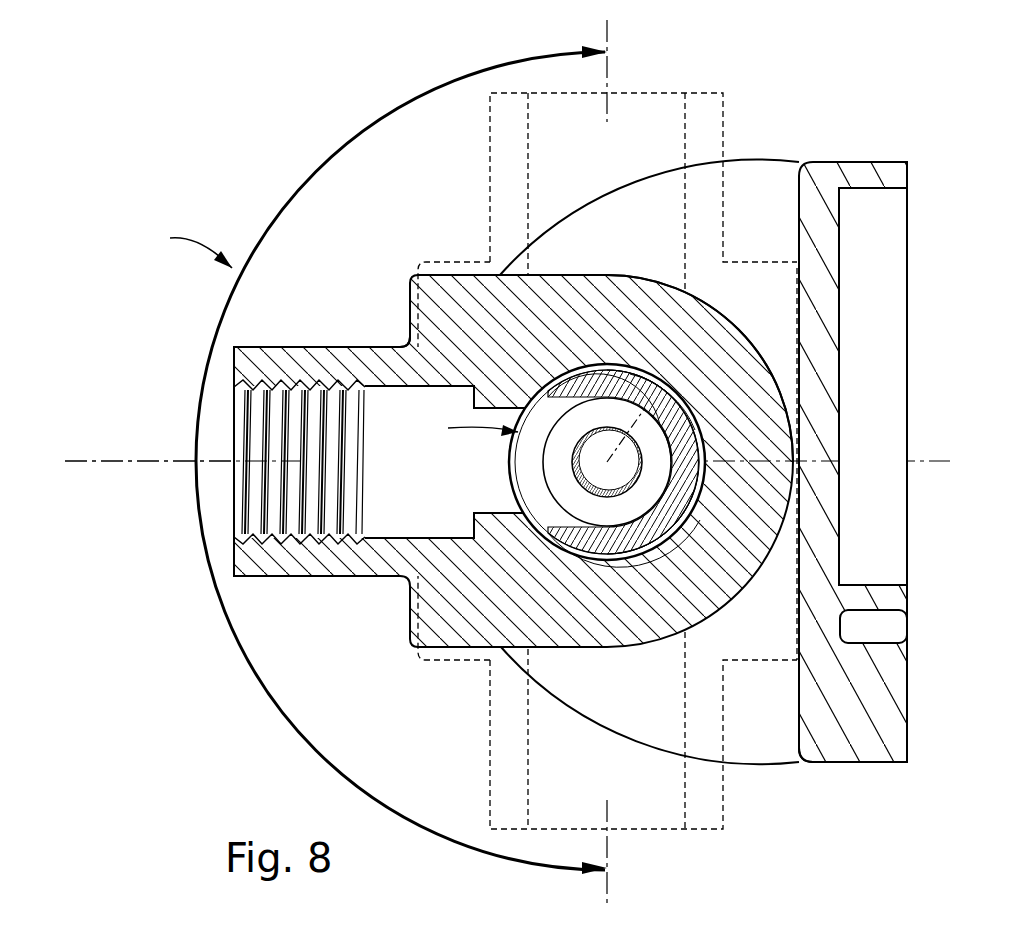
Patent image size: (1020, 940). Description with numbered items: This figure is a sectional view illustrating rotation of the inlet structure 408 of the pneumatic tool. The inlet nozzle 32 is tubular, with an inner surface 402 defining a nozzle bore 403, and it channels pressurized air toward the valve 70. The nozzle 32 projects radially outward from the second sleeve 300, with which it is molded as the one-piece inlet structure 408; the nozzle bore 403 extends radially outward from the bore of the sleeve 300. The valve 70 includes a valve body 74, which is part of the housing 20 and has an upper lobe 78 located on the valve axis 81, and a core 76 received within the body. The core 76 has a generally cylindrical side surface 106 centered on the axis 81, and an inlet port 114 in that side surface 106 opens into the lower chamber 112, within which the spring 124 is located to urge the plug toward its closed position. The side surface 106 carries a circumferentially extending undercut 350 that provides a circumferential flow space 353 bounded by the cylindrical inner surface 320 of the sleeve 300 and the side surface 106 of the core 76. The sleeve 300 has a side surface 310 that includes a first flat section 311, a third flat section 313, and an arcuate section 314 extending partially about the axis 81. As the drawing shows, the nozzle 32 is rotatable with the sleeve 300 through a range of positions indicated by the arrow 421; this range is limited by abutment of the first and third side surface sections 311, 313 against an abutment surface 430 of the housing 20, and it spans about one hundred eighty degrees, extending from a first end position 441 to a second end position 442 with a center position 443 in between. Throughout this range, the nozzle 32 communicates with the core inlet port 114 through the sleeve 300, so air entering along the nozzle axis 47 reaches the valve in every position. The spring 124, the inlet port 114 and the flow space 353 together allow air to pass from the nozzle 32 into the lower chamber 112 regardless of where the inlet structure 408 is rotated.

The housing 20 is at (865, 162).
The inlet nozzle 32 is at (330, 347).
The flow axis 47 is at (110, 461).
The valve 70 is at (638, 362).
The valve body 74 is at (790, 162).
The core 76 is at (663, 397).
The upper lobe 78 is at (738, 162).
The valve axis 81 is at (690, 378).
The side surface 106 is at (683, 400).
The lower chamber 112 is at (668, 433).
The inlet port 114 is at (454, 424).
The spring 124 is at (645, 466).
The second sleeve 300 is at (433, 272).
The side surface 310 is at (723, 610).
The first flat section 311 is at (563, 275).
The third flat section 313 is at (567, 650).
The arcuate section 314 is at (742, 333).
The cylindrical inner surface 320 is at (683, 508).
The undercut 350 is at (683, 527).
The circumferential flow space 353 is at (640, 558).
The inner surface 402 is at (380, 533).
The nozzle bore 403 is at (421, 487).
The inlet structure 408 is at (173, 253).
The arrow 421 is at (305, 182).
The abutment surface 430 is at (798, 678).
The first end position 441 is at (490, 137).
The second end position 442 is at (490, 718).
The center position 443 is at (328, 347).